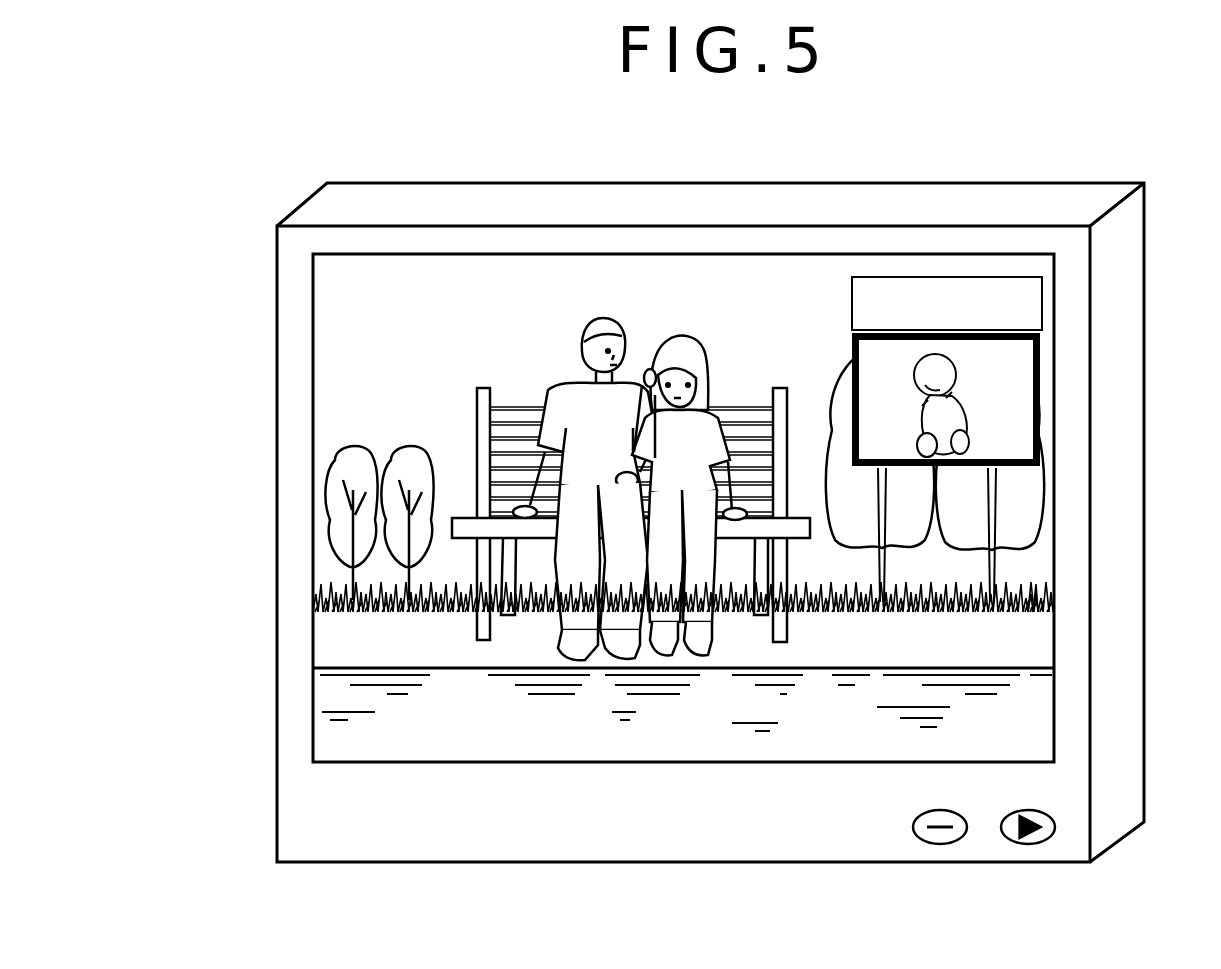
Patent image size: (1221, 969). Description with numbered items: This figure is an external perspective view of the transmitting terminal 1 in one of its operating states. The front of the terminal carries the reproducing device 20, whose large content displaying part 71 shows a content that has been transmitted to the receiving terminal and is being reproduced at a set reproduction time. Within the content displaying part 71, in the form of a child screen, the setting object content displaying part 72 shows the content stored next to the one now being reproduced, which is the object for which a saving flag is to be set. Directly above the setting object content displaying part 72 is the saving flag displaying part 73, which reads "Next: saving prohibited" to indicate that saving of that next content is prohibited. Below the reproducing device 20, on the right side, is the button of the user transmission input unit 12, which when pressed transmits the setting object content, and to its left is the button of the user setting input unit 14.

The transmitting terminal 1 is at (608, 183).
The reproducing device 20 is at (1054, 632).
The content displaying part 71 is at (345, 638).
The setting object content displaying part 72 is at (1040, 362).
The saving flag displaying part 73 is at (948, 277).
The user setting input unit 14 is at (940, 844).
The user transmission input unit 12 is at (1028, 844).